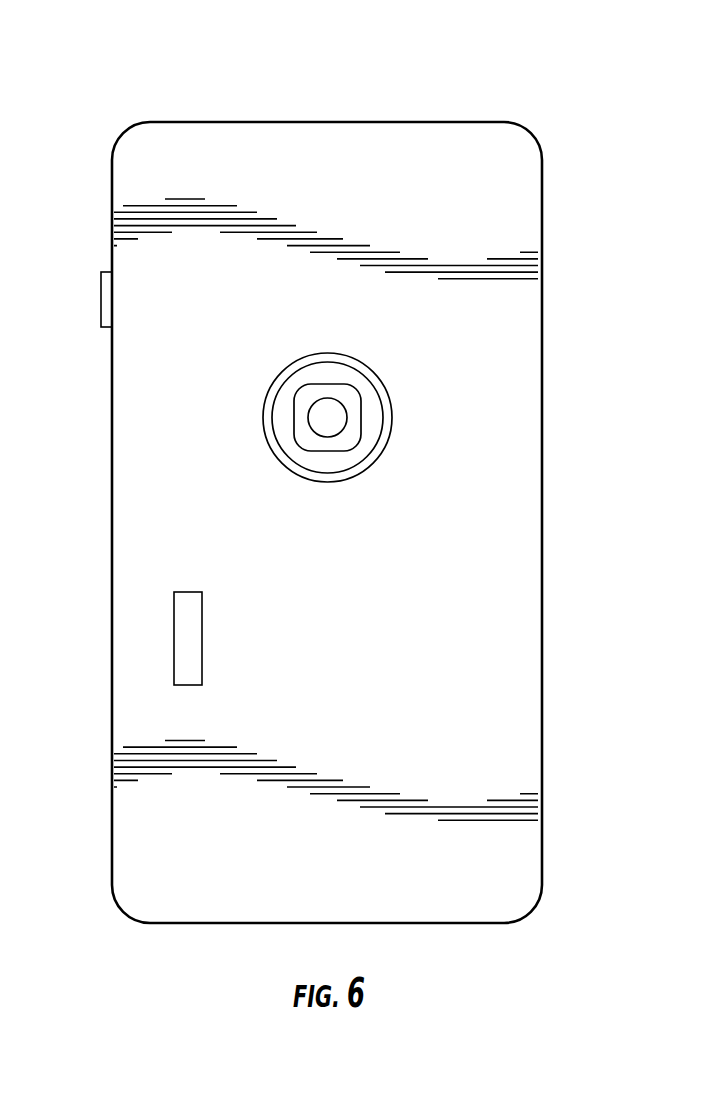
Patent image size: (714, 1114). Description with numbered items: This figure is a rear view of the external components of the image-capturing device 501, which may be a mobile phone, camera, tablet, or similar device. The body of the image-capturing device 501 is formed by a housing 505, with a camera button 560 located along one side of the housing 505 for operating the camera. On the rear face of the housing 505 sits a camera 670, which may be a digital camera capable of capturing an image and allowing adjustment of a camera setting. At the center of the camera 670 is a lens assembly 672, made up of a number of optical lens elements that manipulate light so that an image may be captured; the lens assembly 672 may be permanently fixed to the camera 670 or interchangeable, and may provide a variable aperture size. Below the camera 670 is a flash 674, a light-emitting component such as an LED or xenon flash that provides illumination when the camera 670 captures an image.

The image-capturing device 501 is at (157, 72).
The housing 505 is at (502, 605).
The camera button 560 is at (105, 302).
The camera 670 is at (362, 444).
The lens assembly 672 is at (347, 417).
The flash 674 is at (174, 643).